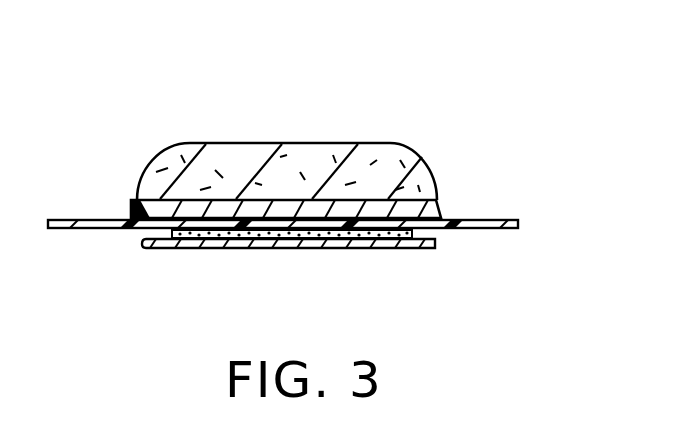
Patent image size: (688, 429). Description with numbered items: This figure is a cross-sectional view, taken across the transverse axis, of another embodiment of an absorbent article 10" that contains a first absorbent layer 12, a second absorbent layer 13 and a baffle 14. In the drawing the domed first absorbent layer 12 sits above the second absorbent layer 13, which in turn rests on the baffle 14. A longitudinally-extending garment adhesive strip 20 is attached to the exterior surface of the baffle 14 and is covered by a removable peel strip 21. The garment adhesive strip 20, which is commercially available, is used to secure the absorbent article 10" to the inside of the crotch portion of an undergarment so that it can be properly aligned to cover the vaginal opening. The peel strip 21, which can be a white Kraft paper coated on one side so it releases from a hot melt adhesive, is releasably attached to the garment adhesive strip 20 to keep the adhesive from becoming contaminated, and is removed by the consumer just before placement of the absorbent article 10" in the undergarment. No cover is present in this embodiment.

The absorbent article 10 is at (447, 66).
The first absorbent layer 12 is at (394, 151).
The second absorbent layer 13 is at (441, 206).
The baffle 14 is at (518, 222).
The garment adhesive strip 20 is at (406, 231).
The peel strip 21 is at (378, 249).